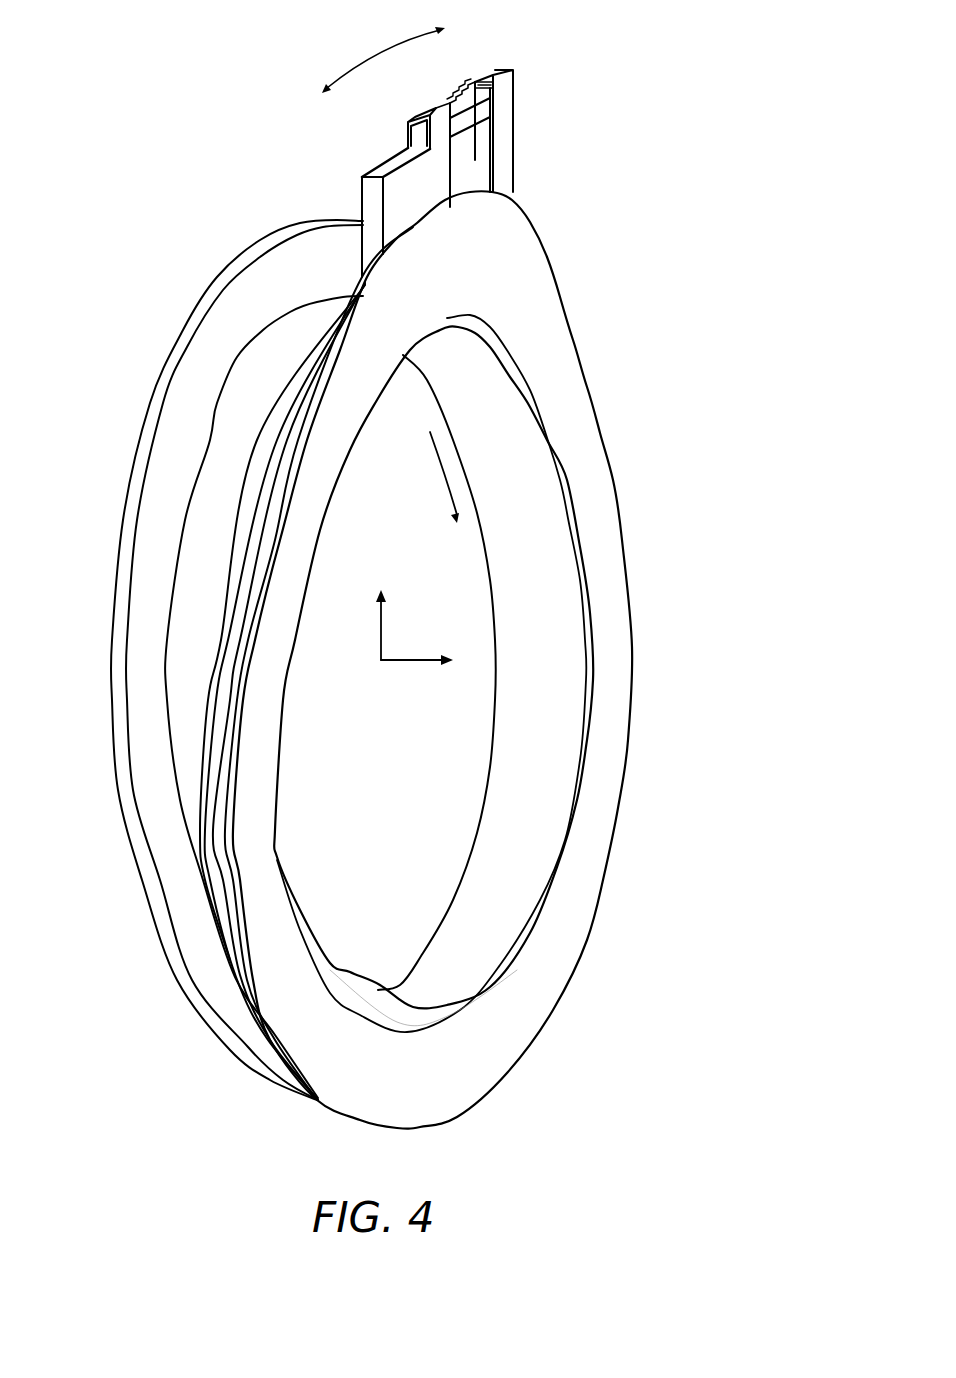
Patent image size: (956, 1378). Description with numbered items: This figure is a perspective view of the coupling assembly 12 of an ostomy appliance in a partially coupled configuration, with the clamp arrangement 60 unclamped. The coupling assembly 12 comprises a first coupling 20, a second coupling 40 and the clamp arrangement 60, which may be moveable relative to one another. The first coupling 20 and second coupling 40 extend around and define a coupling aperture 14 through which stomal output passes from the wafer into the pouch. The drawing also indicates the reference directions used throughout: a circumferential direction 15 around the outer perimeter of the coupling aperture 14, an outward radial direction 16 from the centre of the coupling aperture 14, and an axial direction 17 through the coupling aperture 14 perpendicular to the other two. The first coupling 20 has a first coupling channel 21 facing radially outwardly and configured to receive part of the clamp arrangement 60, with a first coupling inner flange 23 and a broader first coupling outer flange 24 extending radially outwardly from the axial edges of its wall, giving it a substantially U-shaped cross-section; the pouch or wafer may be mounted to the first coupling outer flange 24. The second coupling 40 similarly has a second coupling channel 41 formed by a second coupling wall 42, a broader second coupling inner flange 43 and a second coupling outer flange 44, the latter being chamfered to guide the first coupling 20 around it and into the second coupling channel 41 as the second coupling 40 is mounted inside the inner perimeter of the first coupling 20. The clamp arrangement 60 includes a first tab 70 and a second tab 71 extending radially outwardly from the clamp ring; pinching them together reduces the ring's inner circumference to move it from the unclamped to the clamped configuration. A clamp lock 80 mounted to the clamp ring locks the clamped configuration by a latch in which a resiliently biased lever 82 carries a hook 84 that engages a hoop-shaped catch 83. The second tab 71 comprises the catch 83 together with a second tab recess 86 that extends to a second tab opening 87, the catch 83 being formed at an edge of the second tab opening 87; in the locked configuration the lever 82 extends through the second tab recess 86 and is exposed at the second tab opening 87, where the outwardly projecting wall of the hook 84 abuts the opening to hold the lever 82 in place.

The coupling assembly 12 is at (629, 256).
The coupling aperture 14 is at (389, 818).
The circumferential direction 15 is at (442, 472).
The outward radial direction 16 is at (380, 632).
The axial direction 17 is at (410, 672).
The first coupling 20 is at (445, 679).
The first coupling channel 21 is at (215, 843).
The first coupling inner flange 23 is at (212, 918).
The first coupling outer flange 24 is at (552, 1010).
The second coupling 40 is at (125, 503).
The second coupling channel 41 is at (213, 437).
The second coupling wall 42 is at (277, 343).
The second coupling inner flange 43 is at (197, 313).
The second coupling outer flange 44 is at (568, 480).
The clamp arrangement 60 is at (447, 151).
The first tab 70 is at (510, 133).
The second tab 71 is at (362, 195).
The clamp lock 80 is at (463, 93).
The lever 82 is at (479, 65).
The catch 83 is at (407, 127).
The hook 84 is at (495, 86).
The second tab recess 86 is at (392, 167).
The second tab opening 87 is at (417, 160).